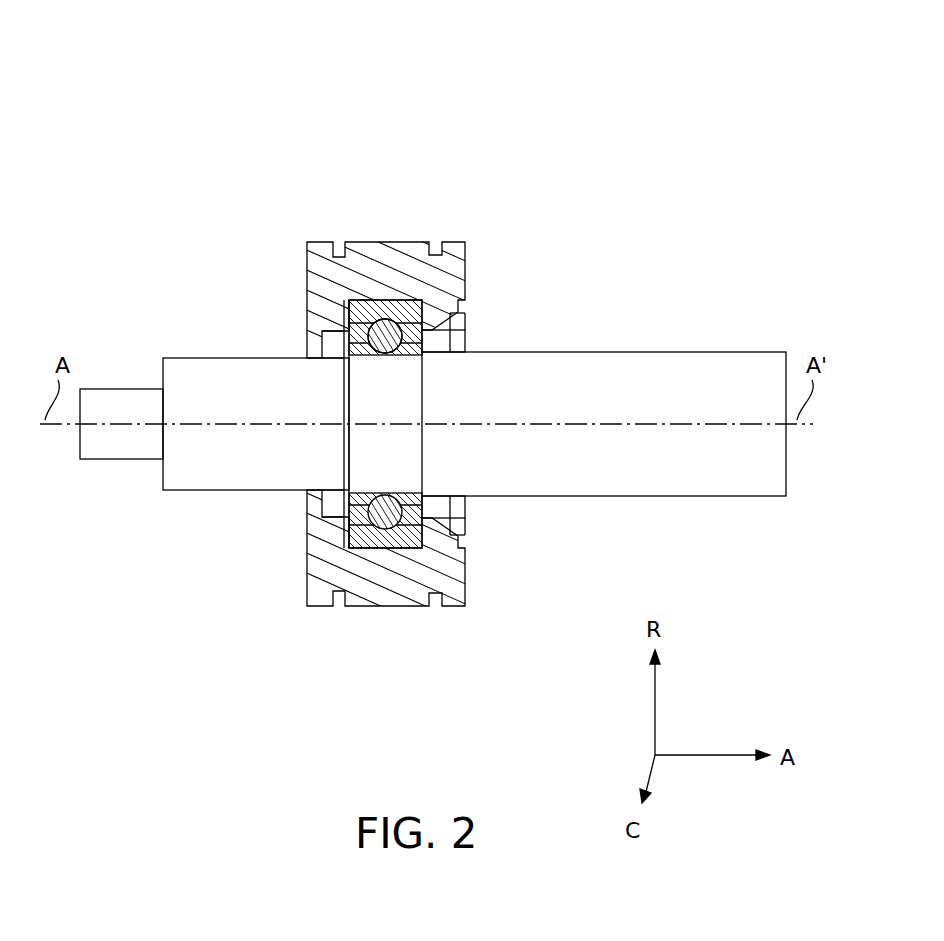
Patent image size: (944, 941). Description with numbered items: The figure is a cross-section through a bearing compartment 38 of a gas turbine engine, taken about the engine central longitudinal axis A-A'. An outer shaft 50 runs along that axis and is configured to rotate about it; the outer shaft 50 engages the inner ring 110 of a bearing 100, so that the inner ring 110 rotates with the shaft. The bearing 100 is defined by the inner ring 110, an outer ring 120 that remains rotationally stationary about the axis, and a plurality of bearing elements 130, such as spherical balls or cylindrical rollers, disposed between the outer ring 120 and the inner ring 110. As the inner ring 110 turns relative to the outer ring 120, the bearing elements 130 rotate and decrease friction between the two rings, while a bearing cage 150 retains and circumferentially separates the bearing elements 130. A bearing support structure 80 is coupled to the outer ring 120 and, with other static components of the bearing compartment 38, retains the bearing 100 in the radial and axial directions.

The bearing compartment 38 is at (662, 93).
The outer shaft 50 is at (588, 365).
The bearing support structure 80 is at (443, 280).
The bearing 100 is at (328, 352).
The inner ring 110 is at (348, 358).
The outer ring 120 is at (378, 310).
The bearing elements 130 is at (368, 332).
The bearing cage 150 is at (343, 355).